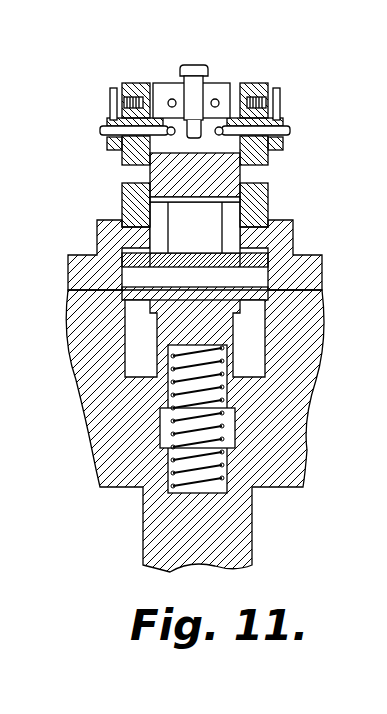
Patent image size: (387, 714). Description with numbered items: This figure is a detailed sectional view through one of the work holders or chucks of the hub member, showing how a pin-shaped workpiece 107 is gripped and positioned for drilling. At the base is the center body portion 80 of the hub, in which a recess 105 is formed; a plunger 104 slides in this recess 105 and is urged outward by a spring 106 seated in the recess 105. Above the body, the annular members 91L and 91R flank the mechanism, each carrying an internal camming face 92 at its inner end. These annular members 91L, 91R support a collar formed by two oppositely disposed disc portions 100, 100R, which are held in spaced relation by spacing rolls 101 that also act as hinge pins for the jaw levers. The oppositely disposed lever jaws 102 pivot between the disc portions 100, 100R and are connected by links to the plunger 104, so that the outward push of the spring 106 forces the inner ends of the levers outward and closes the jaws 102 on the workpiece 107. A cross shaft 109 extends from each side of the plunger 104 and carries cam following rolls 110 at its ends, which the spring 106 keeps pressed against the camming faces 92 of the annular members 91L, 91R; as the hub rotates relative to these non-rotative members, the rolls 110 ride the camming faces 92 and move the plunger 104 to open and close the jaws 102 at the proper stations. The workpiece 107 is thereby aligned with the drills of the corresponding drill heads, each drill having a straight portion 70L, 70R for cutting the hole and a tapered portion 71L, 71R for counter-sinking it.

The center body portion 80 is at (112, 455).
The annular member 91L is at (78, 262).
The annular member 91R is at (297, 270).
The camming face 92 is at (134, 252).
The disc portion 100 is at (128, 197).
The disc portion 100R is at (255, 200).
The spacing roll 101 is at (193, 182).
The lever jaw 102 is at (221, 88).
The plunger 104 is at (231, 332).
The recess 105 is at (232, 422).
The spring 106 is at (251, 419).
The workpiece 107 is at (197, 80).
The cross shaft 109 is at (202, 273).
The cam following roll 110 is at (143, 300).
The straight portion 70L is at (170, 138).
The straight portion 70R is at (222, 138).
The tapered portion 71L is at (100, 130).
The tapered portion 71R is at (292, 131).